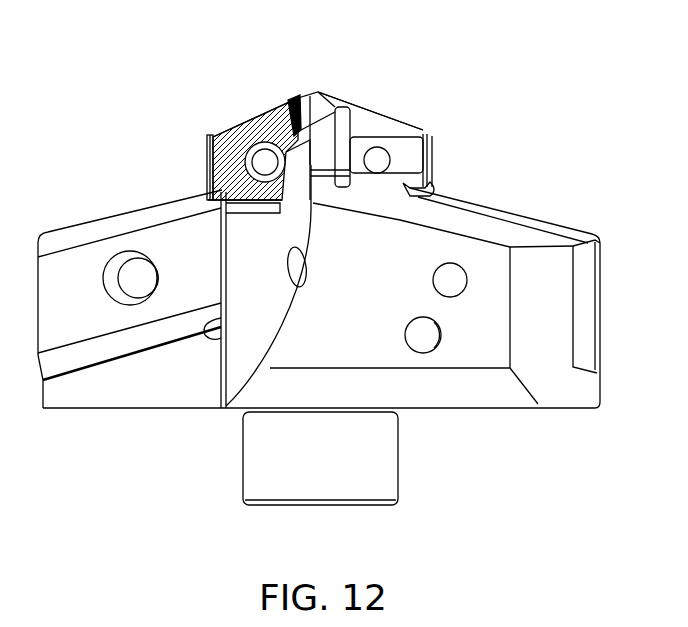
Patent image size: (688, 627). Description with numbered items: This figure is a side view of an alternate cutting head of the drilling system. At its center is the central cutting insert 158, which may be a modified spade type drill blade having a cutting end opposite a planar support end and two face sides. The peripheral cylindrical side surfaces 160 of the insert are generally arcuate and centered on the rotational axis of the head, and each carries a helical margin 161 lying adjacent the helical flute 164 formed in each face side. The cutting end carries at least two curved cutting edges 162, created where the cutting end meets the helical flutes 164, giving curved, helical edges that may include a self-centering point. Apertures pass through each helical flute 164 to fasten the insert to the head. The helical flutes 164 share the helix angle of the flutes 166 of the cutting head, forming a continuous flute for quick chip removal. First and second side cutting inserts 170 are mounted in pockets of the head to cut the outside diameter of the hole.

The central cutting insert 158 is at (270, 108).
The peripheral cylindrical side surfaces 160 is at (207, 148).
The helical margin 161 is at (208, 156).
The curved cutting edges 162 is at (235, 127).
The helical flute 164 is at (232, 190).
The flutes 166 is at (253, 320).
The side cutting inserts 170 is at (85, 220).